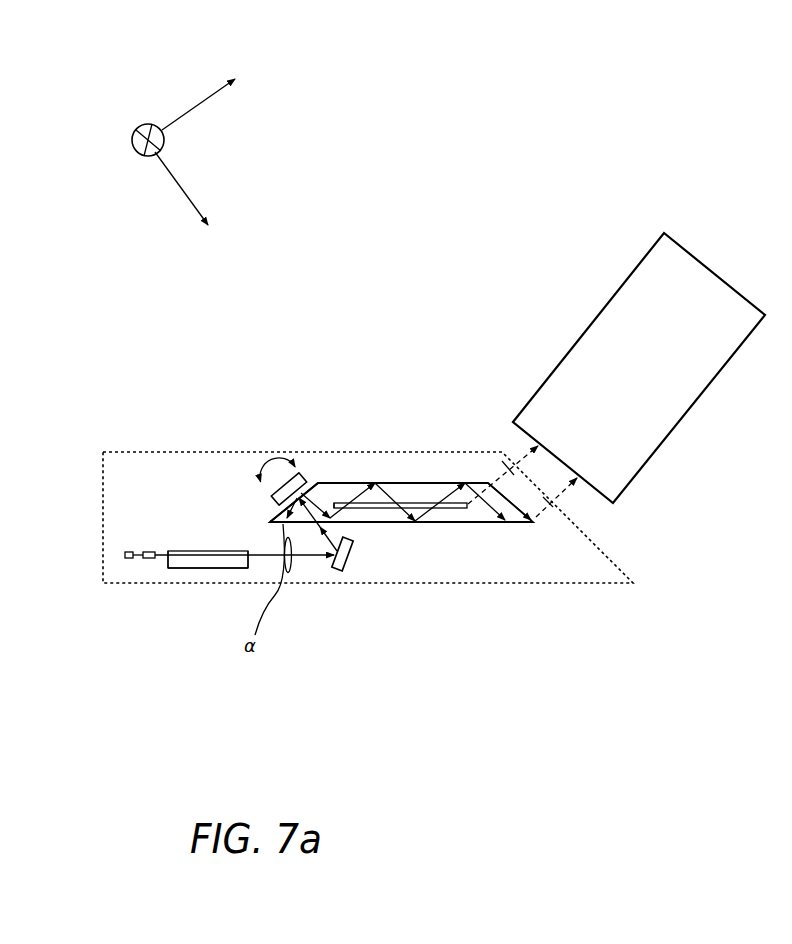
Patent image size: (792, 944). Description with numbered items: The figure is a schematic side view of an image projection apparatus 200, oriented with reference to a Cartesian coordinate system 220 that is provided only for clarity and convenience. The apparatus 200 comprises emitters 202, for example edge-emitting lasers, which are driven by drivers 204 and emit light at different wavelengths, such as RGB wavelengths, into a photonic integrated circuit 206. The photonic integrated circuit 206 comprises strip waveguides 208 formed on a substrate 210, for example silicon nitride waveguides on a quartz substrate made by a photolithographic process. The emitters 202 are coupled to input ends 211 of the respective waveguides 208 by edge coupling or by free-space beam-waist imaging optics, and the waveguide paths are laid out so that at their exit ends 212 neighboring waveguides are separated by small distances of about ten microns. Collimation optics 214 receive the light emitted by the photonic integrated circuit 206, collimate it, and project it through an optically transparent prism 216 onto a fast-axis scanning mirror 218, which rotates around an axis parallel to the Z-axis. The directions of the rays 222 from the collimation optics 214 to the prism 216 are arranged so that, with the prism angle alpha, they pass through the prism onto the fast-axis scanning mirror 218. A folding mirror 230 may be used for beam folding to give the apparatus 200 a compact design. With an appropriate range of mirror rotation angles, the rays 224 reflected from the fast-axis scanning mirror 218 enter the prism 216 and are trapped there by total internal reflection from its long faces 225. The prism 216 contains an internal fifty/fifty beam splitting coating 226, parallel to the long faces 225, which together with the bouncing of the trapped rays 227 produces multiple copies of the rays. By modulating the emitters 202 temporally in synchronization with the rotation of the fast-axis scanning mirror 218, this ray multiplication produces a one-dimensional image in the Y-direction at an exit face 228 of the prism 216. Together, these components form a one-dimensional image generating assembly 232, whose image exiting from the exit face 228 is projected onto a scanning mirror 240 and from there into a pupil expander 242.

The image projection apparatus 200 is at (392, 268).
The emitters 202 is at (148, 560).
The drivers 204 is at (128, 552).
The photonic integrated circuit 206 is at (219, 588).
The strip waveguides 208 is at (207, 552).
The substrate 210 is at (190, 570).
The input ends 211 is at (168, 552).
The exit ends 212 is at (248, 550).
The collimation optics 214 is at (288, 574).
The prism 216 is at (413, 523).
The fast-axis scanning mirror 218 is at (302, 477).
The Cartesian coordinate system 220 is at (247, 142).
The rays 222 is at (325, 548).
The reflected rays 224 is at (330, 483).
The long faces 225 is at (428, 483).
The beam splitting coating 226 is at (388, 501).
The trapped rays 227 is at (350, 524).
The exit face 228 is at (505, 493).
The folding mirror 230 is at (343, 573).
The 1D image generating assembly 232 is at (537, 584).
The scanning mirror 240 is at (562, 490).
The pupil expander 242 is at (633, 463).